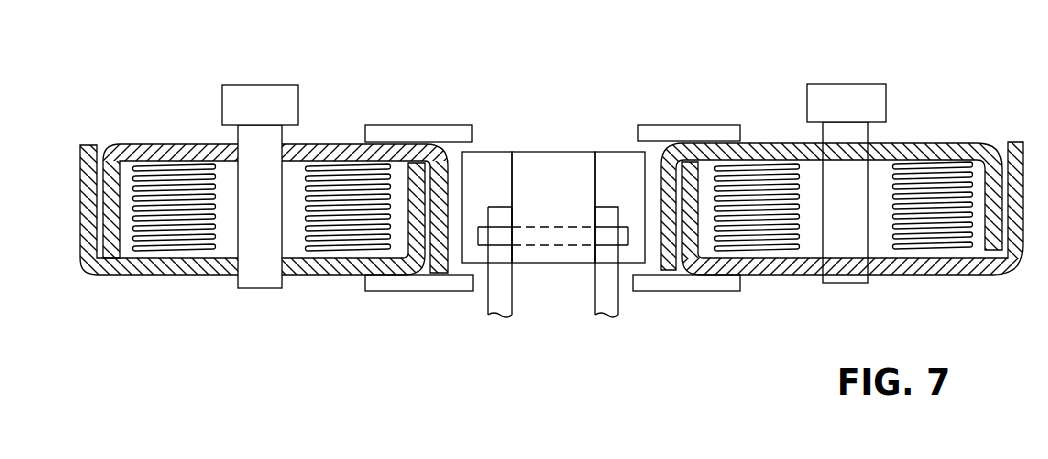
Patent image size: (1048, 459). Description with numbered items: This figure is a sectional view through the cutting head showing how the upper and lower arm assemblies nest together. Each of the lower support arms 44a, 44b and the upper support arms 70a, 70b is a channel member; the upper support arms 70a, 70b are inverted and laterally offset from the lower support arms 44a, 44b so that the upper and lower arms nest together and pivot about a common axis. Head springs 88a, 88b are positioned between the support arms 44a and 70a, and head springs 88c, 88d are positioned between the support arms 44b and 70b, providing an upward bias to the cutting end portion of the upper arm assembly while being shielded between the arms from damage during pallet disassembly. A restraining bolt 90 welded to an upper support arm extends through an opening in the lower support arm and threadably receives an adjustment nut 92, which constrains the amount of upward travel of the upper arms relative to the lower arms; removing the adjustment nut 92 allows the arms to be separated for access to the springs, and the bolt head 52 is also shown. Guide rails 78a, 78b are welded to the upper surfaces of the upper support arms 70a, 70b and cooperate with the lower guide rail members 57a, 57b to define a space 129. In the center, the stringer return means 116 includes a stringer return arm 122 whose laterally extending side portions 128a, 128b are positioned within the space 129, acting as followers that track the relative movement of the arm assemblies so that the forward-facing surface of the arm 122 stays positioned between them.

The lower support arm 44a is at (933, 273).
The lower support arm 44b is at (138, 280).
The bolt head 52 is at (243, 85).
The guide rail member 57a is at (710, 291).
The guide rail member 57b is at (420, 291).
The upper support arm 70a is at (910, 140).
The upper support arm 70b is at (167, 147).
The guide rail 78a is at (662, 123).
The guide rail 78b is at (395, 125).
The head spring 88a is at (895, 228).
The head spring 88b is at (797, 237).
The head spring 88c is at (310, 187).
The head spring 88d is at (213, 243).
The restraining bolt 90 is at (252, 287).
The adjustment nut 92 is at (822, 83).
The stringer return means 116 is at (571, 268).
The stringer return arm 122 is at (525, 152).
The side portion 128a is at (477, 263).
The side portion 128b is at (607, 152).
The space 129 is at (490, 152).